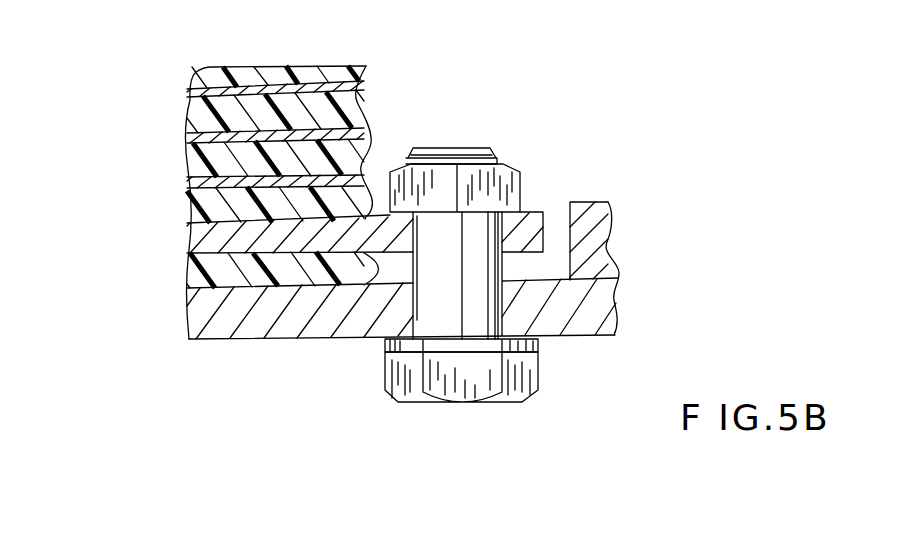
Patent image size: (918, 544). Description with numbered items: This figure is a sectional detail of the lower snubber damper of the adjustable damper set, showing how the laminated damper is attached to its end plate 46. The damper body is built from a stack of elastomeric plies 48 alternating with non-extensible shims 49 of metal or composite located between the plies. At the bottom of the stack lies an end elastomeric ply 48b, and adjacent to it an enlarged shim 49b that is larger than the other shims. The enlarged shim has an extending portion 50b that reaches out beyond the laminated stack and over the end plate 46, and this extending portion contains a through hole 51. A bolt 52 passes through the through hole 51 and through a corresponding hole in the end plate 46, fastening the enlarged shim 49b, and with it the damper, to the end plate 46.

The end plate 46 is at (295, 322).
The elastomeric plies 48 is at (360, 105).
The non-extensible shims 49 is at (360, 132).
The end elastomeric ply 48b is at (200, 277).
The enlarged shim 49b is at (186, 248).
The extending portion 50b is at (544, 211).
The through holes 51 is at (497, 237).
The bolts 52 is at (405, 378).